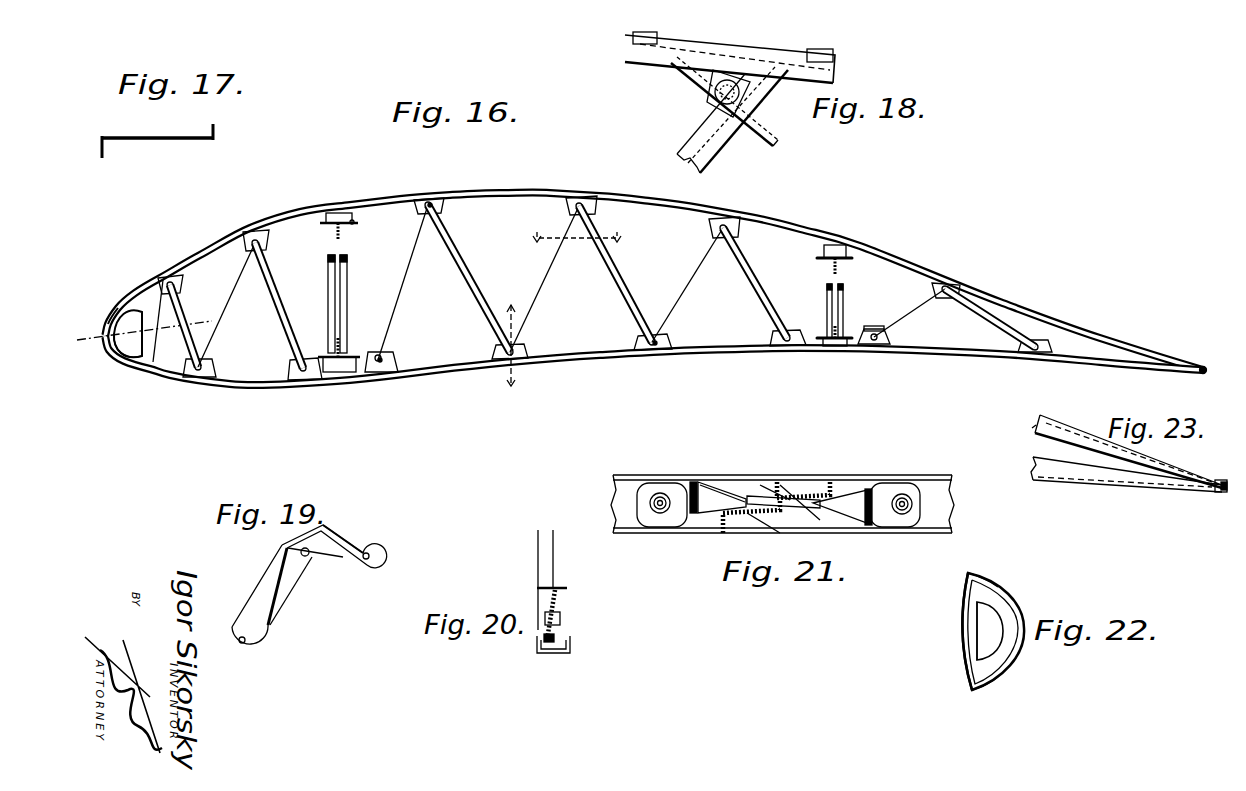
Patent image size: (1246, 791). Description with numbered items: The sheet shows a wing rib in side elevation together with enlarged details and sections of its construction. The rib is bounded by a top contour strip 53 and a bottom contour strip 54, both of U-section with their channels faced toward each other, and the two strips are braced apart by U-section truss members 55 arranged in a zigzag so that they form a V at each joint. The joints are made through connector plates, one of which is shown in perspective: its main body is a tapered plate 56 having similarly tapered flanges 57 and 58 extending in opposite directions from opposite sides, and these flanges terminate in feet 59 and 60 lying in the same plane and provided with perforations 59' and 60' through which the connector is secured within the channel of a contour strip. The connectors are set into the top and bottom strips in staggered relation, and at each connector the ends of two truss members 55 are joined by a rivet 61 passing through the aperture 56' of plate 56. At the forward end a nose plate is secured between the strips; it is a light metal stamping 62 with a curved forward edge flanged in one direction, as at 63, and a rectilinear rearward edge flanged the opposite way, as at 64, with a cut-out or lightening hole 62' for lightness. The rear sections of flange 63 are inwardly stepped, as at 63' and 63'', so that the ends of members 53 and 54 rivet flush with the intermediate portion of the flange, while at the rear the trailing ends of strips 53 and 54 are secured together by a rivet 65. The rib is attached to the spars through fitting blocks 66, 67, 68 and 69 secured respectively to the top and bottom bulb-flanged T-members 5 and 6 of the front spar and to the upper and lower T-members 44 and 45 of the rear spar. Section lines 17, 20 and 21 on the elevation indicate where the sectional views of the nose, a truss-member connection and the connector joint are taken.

In FIG. 16, the top bulb-flanged T-member 5 is at (332, 218).
In FIG. 16, the bottom bulb-flanged T-member 6 is at (349, 364).
In FIG. 16, the section line 17— 17 is at (143, 330).
In FIG. 16, the section line 20— 20 is at (508, 353).
In FIG. 16, the section line 21— 21 is at (577, 226).
In FIG. 16, the upper T-member of rear spar 44 is at (840, 262).
In FIG. 16, the lower T-member of rear spar 45 is at (877, 326).
In FIG. 16, the top contour strip 53 is at (528, 190).
In FIG. 18, the top contour strip 53 is at (640, 62).
In FIG. 21, the top contour strip 53 is at (782, 477).
In FIG. 23, the top contour strip 53 is at (1052, 420).
In FIG. 16, the bottom contour strip 54 is at (622, 359).
In FIG. 20, the bottom contour strip 54 is at (558, 655).
In FIG. 21, the bottom contour strip 54 is at (782, 504).
In FIG. 23, the bottom contour strip 54 is at (1075, 470).
In FIG. 16, the truss member 55 is at (552, 265).
In FIG. 18, the truss member 55 is at (747, 145).
In FIG. 20, the truss member 55 is at (540, 545).
In FIG. 21, the truss member 55 is at (831, 480).
In FIG. 16, the tapered plate of connector 56 is at (605, 286).
In FIG. 18, the tapered plate of connector 56 is at (696, 96).
In FIG. 19, the tapered plate of connector 56 is at (315, 584).
In FIG. 20, the tapered plate of connector 56 is at (524, 659).
In FIG. 21, the tapered plate of connector 56 is at (786, 487).
In FIG. 19, the aperture of plate 56' is at (323, 591).
In FIG. 19, the tapered flange 57 is at (270, 578).
In FIG. 21, the tapered flange 57 is at (712, 497).
In FIG. 19, the tapered flange 58 is at (345, 543).
In FIG. 21, the tapered flange 58 is at (852, 498).
In FIG. 19, the foot 59 is at (270, 644).
In FIG. 21, the foot 59 is at (662, 483).
In FIG. 19, the perforation 59' is at (241, 665).
In FIG. 19, the foot 60 is at (386, 544).
In FIG. 21, the foot 60 is at (905, 487).
In FIG. 19, the perforation 60' is at (369, 572).
In FIG. 16, the rivet 61 is at (436, 206).
In FIG. 20, the rivet 61 is at (562, 618).
In FIG. 16, the nose plate stamping 62 is at (114, 313).
In FIG. 17, the nose plate stamping 62 is at (160, 168).
In FIG. 22, the nose plate stamping 62 is at (1003, 610).
In FIG. 16, the lightening hole 62' is at (125, 367).
In FIG. 22, the lightening hole 62' is at (955, 631).
In FIG. 16, the forward flange 63 is at (99, 347).
In FIG. 17, the forward flange 63 is at (99, 168).
In FIG. 22, the forward flange 63 is at (1003, 631).
In FIG. 22, the inwardly stepped section of flange 63' is at (983, 563).
In FIG. 22, the inwardly stepped section of flange 63'' is at (985, 700).
In FIG. 17, the rearward flange 64 is at (216, 134).
In FIG. 22, the rearward flange 64 is at (962, 636).
In FIG. 16, the rivet 65 is at (1203, 367).
In FIG. 23, the rivet 65 is at (1222, 480).
In FIG. 16, the fitting block 66 is at (347, 216).
In FIG. 16, the fitting block 67 is at (336, 366).
In FIG. 16, the fitting block 68 is at (838, 247).
In FIG. 16, the fitting block 69 is at (834, 347).